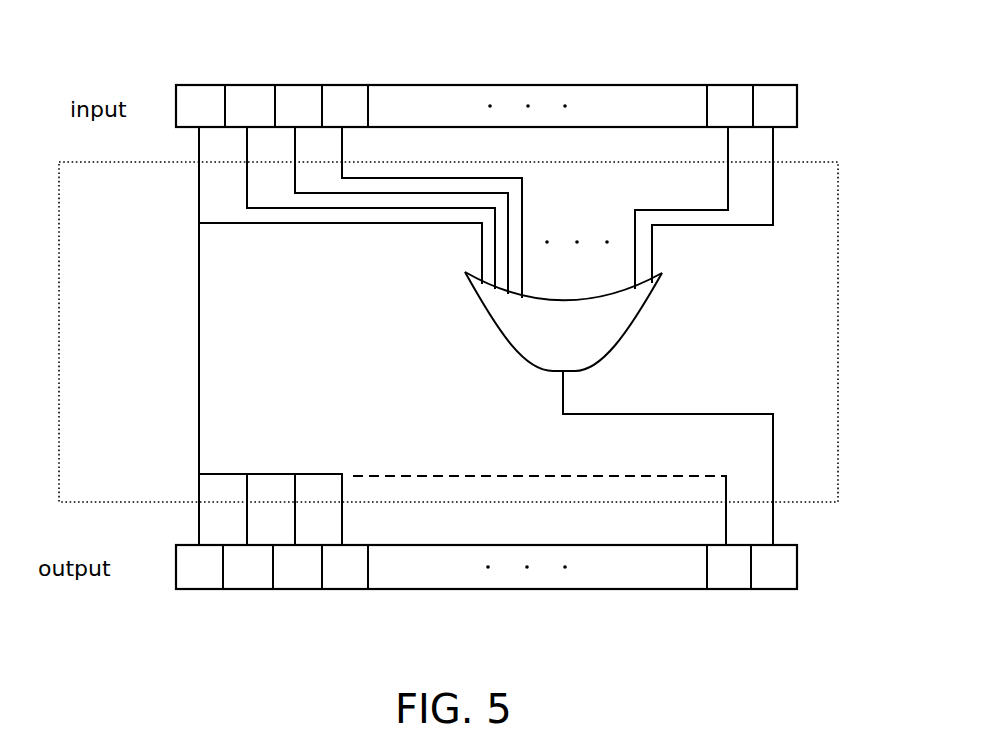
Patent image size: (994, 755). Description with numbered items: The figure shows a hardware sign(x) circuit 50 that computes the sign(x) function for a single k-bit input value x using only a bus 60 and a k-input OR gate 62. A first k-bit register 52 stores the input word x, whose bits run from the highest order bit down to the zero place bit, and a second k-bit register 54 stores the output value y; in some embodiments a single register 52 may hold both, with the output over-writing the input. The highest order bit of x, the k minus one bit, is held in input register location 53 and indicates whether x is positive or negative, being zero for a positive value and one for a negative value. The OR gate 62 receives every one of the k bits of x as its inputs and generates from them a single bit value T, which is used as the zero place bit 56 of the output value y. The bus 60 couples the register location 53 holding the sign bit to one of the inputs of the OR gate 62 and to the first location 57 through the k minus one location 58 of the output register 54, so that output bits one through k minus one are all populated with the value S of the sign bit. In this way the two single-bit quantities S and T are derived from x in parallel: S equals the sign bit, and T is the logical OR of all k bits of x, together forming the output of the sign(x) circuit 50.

The sign(x) circuit 50 is at (838, 290).
The first k bit register 52 is at (527, 78).
The input register location 53 is at (208, 82).
The second k bit register 54 is at (524, 599).
The 0 place bit 56 is at (778, 592).
The first location of the output register 57 is at (720, 592).
The k−1 location of the output register 58 is at (196, 590).
The bus 60 is at (199, 387).
The k input OR gate 62 is at (579, 350).